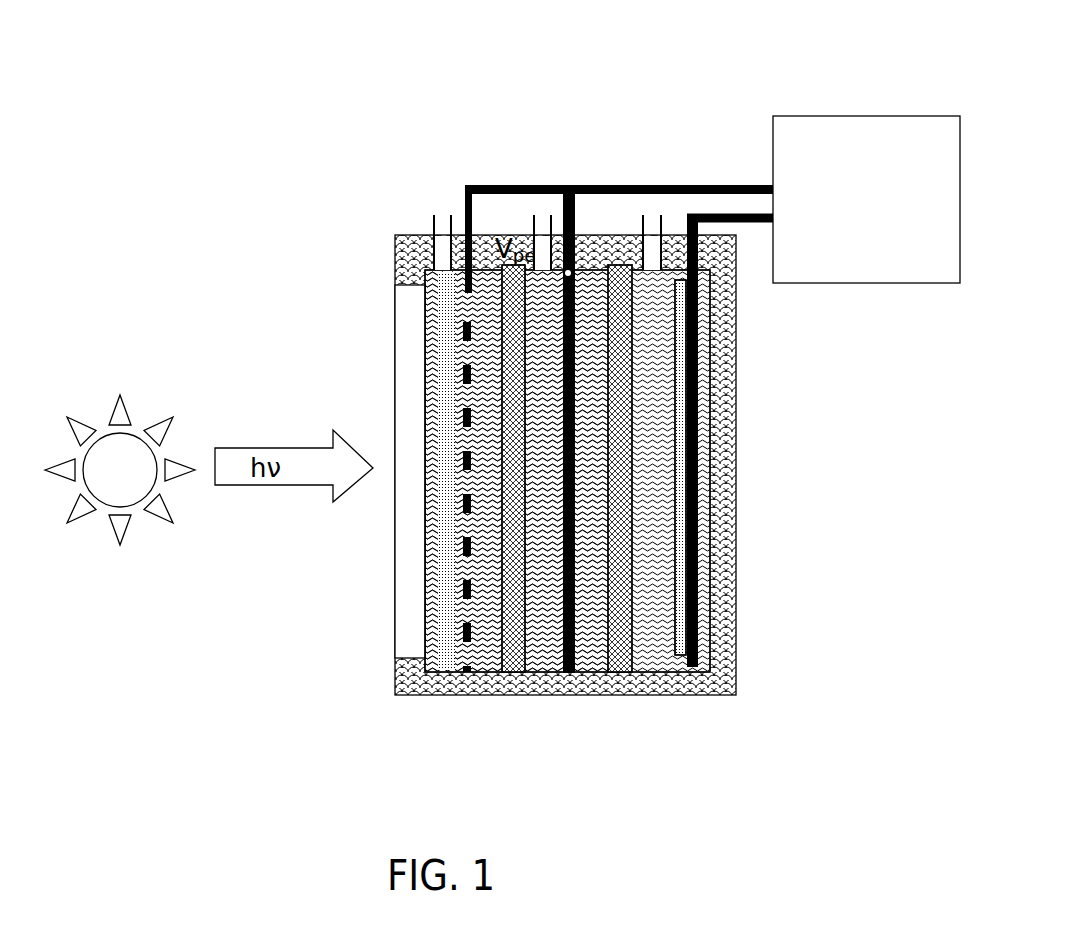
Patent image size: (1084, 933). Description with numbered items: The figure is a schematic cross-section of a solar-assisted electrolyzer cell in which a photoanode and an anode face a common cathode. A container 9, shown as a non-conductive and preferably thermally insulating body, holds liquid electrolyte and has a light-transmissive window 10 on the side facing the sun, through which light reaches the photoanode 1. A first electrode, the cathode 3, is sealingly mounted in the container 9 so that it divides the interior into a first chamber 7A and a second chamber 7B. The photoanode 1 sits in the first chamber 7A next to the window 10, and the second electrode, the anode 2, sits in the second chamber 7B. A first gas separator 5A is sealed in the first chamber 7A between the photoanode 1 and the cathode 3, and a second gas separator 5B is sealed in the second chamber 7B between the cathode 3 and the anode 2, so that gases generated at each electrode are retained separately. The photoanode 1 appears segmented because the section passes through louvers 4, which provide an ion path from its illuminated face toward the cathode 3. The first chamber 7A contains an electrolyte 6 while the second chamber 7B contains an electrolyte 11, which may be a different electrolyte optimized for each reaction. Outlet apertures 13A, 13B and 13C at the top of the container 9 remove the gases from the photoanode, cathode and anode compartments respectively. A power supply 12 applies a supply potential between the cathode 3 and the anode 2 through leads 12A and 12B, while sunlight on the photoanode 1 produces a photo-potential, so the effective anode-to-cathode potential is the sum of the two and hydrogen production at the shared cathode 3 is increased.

The photoanode 1 is at (367, 497).
The second electrode (anode) 2 is at (775, 467).
The first electrode (cathode) 3 is at (605, 486).
The louvers or apertures 4 is at (358, 471).
The first gas separator 5A is at (396, 511).
The second gas separator 5B is at (737, 507).
The electrolyte 6 is at (558, 532).
The first chamber 7A is at (473, 336).
The second chamber 7B is at (575, 336).
The container 9 is at (645, 465).
The window 10 is at (336, 471).
The electrolyte 11 is at (803, 468).
The power supply 12 is at (866, 199).
The first power supply terminal lead 12A is at (656, 231).
The second power supply terminal lead 12B is at (767, 238).
The outlet aperture 13A is at (339, 214).
The outlet aperture 13B is at (433, 193).
The outlet aperture 13C is at (688, 192).